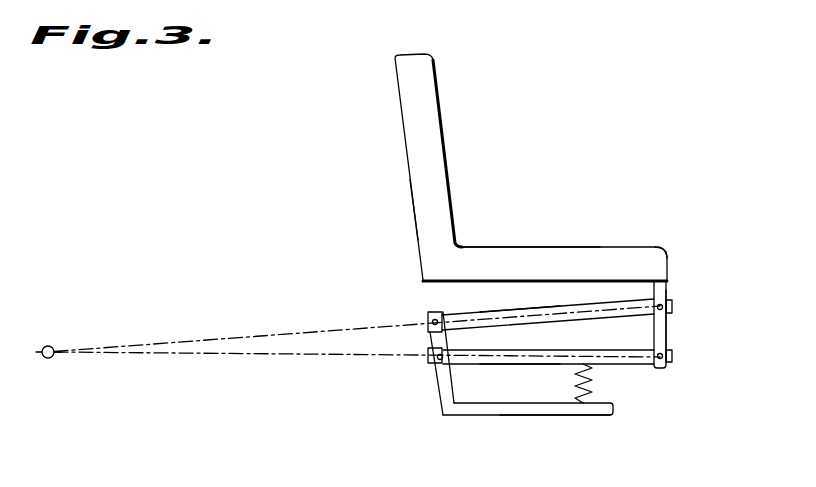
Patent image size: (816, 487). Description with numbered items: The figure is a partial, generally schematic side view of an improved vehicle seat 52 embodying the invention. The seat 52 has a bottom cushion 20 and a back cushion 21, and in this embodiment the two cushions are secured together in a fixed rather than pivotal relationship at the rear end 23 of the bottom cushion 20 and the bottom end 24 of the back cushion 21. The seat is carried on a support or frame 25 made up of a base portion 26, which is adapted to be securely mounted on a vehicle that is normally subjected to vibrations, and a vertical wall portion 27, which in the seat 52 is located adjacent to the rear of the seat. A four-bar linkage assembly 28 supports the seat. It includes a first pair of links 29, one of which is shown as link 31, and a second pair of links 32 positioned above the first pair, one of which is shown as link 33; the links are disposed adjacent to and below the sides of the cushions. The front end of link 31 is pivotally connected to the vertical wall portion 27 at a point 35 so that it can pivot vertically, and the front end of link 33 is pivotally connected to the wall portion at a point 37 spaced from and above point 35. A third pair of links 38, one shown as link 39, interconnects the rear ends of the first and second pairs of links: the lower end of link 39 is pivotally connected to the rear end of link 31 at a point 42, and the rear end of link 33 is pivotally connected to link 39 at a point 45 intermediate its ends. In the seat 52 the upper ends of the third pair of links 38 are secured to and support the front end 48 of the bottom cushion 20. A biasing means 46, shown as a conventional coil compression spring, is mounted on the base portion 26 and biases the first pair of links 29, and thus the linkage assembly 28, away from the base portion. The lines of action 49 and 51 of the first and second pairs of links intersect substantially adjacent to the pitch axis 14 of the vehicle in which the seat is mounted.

The pitch axis 14 is at (50, 345).
The bottom cushion 20 is at (588, 263).
The back cushion 21 is at (421, 95).
The rear end 23 is at (502, 252).
The bottom end 24 is at (423, 223).
The support or frame 25 is at (505, 418).
The base portion 26 is at (548, 413).
The vertical wall portion 27 is at (438, 393).
The four-bar linkage assembly 28 is at (537, 346).
The first pair of links 29 is at (536, 366).
The link 31 is at (558, 351).
The second pair of links 32 is at (500, 311).
The link 33 is at (533, 313).
The pivot point 35 is at (668, 357).
The pivot point 37 is at (430, 318).
The third pair of links 38 is at (667, 335).
The link 39 is at (666, 325).
The pivot point 42 is at (433, 361).
The pivot point 45 is at (670, 305).
The biasing means 46 is at (595, 378).
The front end 48 is at (665, 253).
The line of action 49 is at (283, 357).
The line of action 51 is at (310, 298).
The improved seat 52 is at (537, 188).